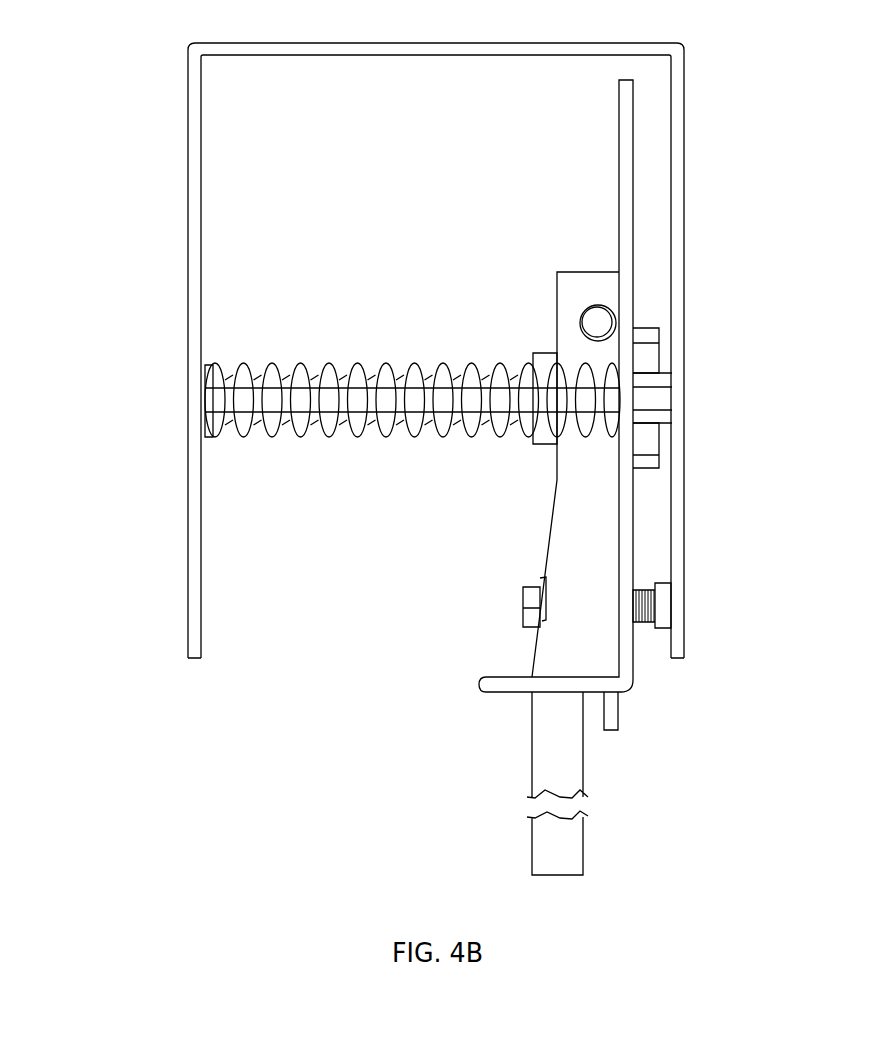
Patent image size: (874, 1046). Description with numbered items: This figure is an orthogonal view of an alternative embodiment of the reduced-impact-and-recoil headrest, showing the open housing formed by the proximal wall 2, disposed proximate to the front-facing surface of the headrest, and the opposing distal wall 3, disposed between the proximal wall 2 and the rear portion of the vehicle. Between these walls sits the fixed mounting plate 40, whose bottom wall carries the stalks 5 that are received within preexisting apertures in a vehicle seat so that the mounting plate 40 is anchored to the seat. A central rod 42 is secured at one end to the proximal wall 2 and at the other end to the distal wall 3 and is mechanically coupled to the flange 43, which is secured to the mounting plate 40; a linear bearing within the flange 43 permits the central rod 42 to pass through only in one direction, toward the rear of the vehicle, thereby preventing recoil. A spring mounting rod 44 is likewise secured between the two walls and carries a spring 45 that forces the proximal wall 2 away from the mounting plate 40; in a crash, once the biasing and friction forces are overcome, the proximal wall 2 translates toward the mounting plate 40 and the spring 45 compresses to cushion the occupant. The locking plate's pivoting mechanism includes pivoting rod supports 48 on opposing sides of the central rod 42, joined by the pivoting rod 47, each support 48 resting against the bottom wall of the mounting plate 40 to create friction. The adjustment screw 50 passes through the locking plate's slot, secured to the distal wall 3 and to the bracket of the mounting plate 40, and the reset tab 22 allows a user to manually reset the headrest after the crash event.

The proximal wall 2 is at (439, 350).
The distal wall 3 is at (188, 270).
The stalks 5 is at (532, 755).
The reset tab 22 is at (618, 722).
The mounting plate 40 is at (632, 148).
The central rod 42 is at (662, 398).
The flange 43 is at (655, 340).
The spring mounting rod 44 is at (312, 365).
The spring 45 is at (283, 440).
The pivoting rod 47 is at (598, 323).
The pivoting rod support 48 is at (558, 555).
The adjustment screw 50 is at (667, 605).